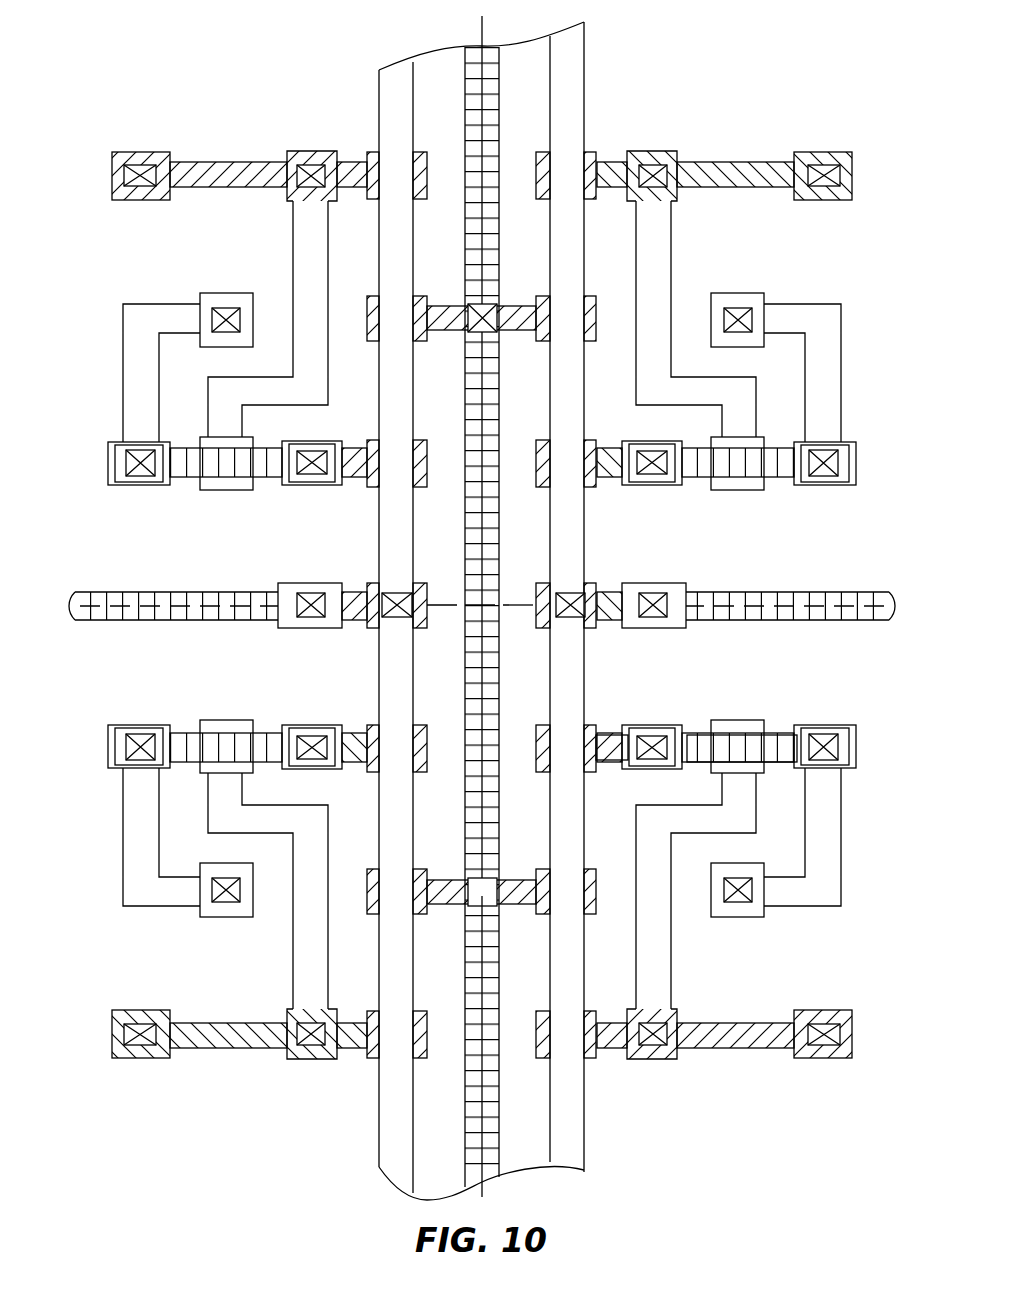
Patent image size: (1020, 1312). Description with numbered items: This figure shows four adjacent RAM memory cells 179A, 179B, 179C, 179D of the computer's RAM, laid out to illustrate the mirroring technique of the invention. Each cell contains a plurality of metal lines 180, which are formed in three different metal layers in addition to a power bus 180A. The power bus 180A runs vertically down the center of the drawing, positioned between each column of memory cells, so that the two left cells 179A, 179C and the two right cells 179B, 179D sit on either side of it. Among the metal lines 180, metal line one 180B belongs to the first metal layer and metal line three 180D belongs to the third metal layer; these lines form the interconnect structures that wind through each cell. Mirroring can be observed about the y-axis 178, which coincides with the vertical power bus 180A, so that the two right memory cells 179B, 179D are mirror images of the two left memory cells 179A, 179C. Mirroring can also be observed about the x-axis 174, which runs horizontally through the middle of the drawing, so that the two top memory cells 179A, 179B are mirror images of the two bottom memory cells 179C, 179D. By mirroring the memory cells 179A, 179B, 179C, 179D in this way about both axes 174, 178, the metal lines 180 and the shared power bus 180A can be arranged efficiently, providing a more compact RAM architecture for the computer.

The x-axis 174 is at (68, 602).
The y-axis 178 is at (480, 22).
The RAM memory cell 179A is at (188, 147).
The RAM memory cell 179B is at (831, 140).
The RAM memory cell 179C is at (121, 834).
The RAM memory cell 179D is at (851, 844).
The metal lines 180 is at (707, 162).
The power bus 180A is at (492, 62).
The metal line one 180B is at (606, 730).
The metal line three 180D is at (690, 730).